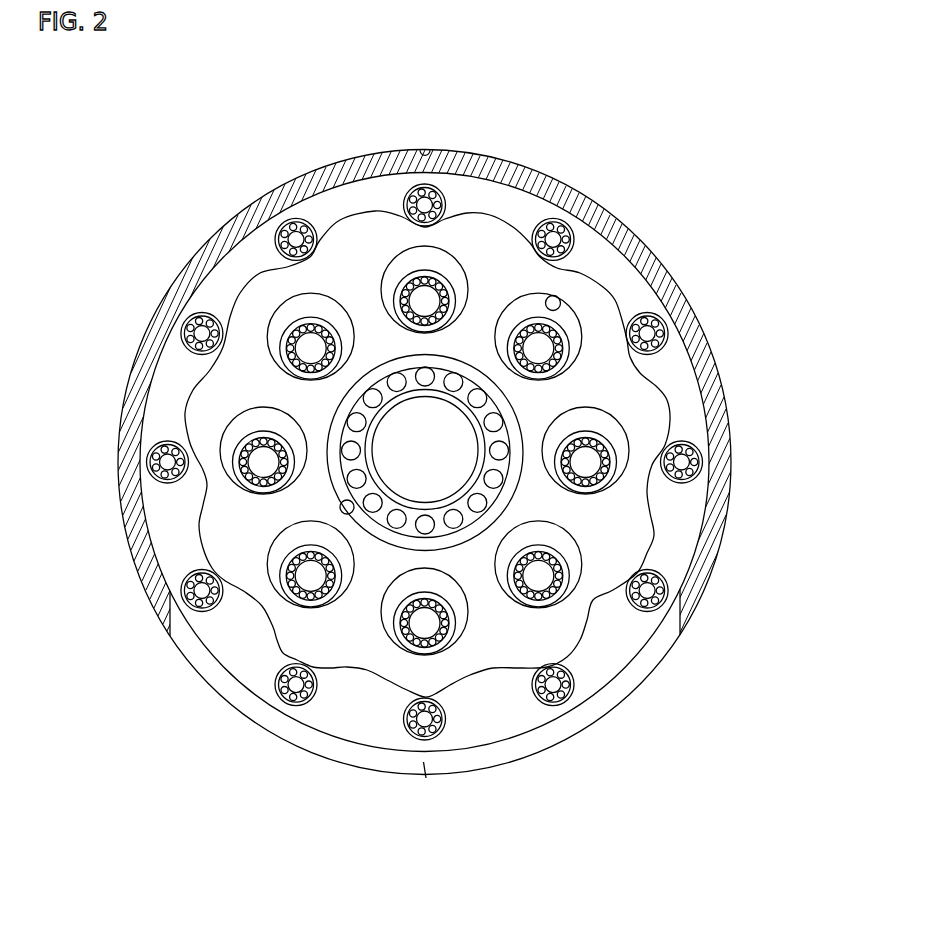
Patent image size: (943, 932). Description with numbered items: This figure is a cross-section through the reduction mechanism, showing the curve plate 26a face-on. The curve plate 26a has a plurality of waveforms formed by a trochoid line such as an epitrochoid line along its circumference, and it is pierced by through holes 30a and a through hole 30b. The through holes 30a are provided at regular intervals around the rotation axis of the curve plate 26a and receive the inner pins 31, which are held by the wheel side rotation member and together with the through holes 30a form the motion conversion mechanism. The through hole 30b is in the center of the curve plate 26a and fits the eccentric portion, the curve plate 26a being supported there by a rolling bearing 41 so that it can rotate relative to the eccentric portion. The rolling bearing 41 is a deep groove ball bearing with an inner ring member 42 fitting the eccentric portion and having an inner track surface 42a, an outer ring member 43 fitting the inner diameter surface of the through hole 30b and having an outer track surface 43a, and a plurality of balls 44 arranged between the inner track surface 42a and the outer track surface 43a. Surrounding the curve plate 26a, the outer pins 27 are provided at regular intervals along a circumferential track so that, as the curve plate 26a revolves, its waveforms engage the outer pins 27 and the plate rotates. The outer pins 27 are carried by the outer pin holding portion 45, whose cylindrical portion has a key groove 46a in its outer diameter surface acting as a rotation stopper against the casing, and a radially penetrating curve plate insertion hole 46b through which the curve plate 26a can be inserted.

The curve plate 26a is at (205, 413).
The outer pins 27 is at (648, 334).
The through holes 30a is at (557, 304).
The through hole 30b is at (345, 506).
The inner pins 31 is at (309, 347).
The rolling bearing 41 is at (517, 410).
The inner ring member 42 is at (407, 510).
The inner track surface 42a is at (410, 380).
The outer ring member 43 is at (463, 533).
The outer track surface 43a is at (450, 375).
The balls 44 is at (492, 488).
The outer pin holding portion 45 is at (579, 188).
The key groove 46a is at (426, 149).
The curve plate insertion hole 46b is at (425, 770).